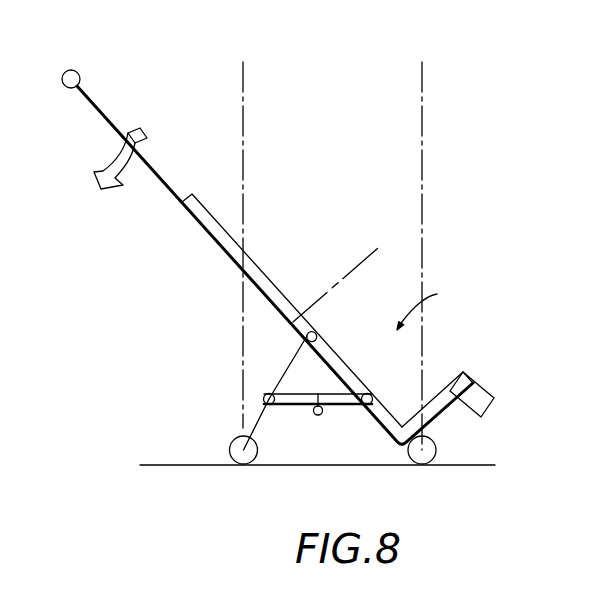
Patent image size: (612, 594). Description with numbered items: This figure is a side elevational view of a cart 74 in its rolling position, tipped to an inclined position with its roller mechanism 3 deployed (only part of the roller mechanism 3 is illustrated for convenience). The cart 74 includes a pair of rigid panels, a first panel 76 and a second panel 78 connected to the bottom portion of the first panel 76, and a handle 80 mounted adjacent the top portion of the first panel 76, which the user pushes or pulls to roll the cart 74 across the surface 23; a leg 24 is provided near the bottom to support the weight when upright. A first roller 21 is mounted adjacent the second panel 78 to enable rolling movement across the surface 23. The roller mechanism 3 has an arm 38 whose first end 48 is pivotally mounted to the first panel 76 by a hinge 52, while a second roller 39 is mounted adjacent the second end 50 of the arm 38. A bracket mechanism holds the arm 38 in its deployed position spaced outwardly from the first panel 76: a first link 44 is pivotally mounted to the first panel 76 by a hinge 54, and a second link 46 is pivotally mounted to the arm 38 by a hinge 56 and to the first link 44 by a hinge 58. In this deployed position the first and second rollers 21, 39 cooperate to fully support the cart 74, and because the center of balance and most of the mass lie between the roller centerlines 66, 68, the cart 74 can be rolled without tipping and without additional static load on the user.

The roller mechanism 3 is at (311, 429).
The first roller 21 is at (432, 450).
The surface 23 is at (365, 466).
The leg 24 is at (486, 397).
The arm 38 is at (290, 364).
The second roller 39 is at (230, 446).
The first link 44 is at (334, 403).
The second link 46 is at (301, 405).
The first end of the arm 48 is at (298, 351).
The second end of the arm 50 is at (292, 422).
The hinge 52 is at (316, 330).
The hinge 54 is at (368, 394).
The hinge 56 is at (264, 395).
The hinge 58 is at (321, 415).
The roller centerline 66 is at (247, 74).
The roller centerline 68 is at (426, 74).
The cart 74 is at (430, 307).
The first panel 76 is at (257, 263).
The second panel 78 is at (445, 383).
The handle 80 is at (80, 72).